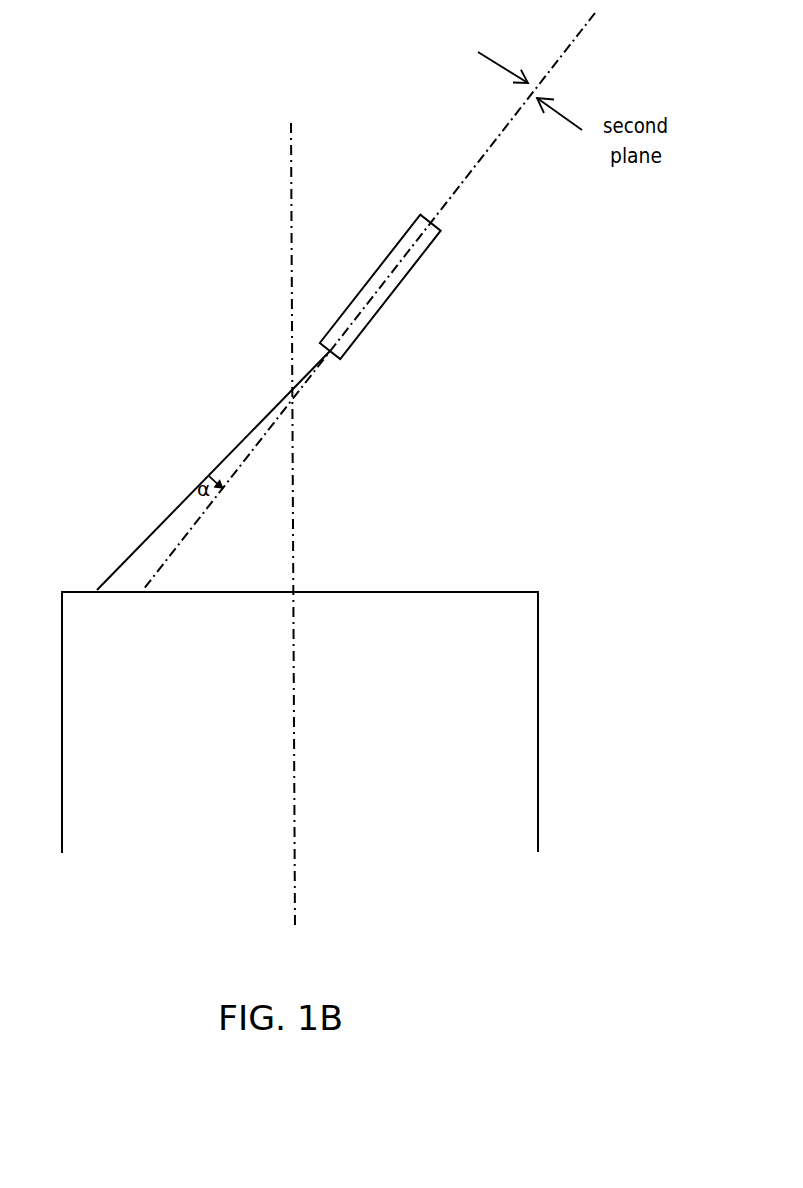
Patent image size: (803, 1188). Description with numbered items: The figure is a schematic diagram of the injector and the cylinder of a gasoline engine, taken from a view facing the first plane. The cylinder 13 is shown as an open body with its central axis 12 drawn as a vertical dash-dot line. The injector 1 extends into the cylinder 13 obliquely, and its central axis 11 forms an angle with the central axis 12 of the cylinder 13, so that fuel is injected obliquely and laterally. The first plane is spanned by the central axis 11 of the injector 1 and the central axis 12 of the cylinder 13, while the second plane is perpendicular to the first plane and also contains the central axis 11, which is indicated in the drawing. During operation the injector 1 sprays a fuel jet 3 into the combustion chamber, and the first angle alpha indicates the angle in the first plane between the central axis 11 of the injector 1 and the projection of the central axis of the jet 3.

The injector 1 is at (402, 280).
The fuel jet 3 is at (123, 560).
The central axis of injector 11 is at (447, 202).
The central axis of cylinder 12 is at (288, 194).
The cylinder 13 is at (538, 712).